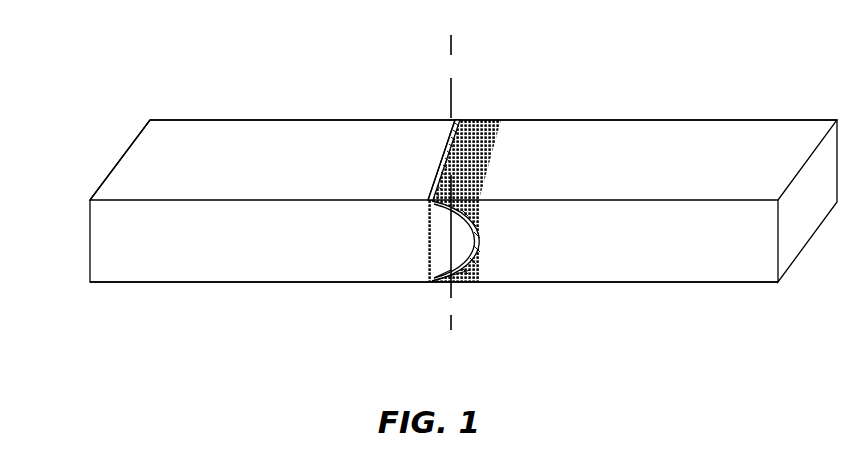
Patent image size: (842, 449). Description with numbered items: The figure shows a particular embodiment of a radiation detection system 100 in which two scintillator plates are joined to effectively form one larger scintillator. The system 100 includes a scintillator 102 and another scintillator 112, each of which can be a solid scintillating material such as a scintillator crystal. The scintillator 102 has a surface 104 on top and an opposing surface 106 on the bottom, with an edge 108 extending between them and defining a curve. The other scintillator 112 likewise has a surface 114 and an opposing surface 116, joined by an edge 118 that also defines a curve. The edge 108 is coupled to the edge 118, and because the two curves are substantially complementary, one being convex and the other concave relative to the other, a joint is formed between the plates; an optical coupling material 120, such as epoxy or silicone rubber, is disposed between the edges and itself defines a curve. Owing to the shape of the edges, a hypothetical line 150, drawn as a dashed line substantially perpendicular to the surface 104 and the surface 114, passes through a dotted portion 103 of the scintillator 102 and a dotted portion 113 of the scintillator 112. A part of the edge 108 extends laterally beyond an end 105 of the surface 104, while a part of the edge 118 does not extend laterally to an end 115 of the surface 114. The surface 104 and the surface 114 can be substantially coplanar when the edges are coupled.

The radiation detection system 100 is at (438, 191).
The scintillator 102 is at (95, 157).
The portion of the scintillator 103 is at (448, 247).
The surface 104 is at (296, 160).
The end of the surface 105 is at (438, 162).
The opposing surface 106 is at (255, 283).
The edge 108 is at (450, 270).
The other scintillator 112 is at (730, 97).
The portion of the scintillator 113 is at (466, 275).
The surface 114 is at (622, 160).
The end of the surface 115 is at (460, 140).
The opposing surface 116 is at (636, 284).
The edge 118 is at (482, 240).
The optical coupling material 120 is at (456, 118).
The hypothetical line 150 is at (455, 330).